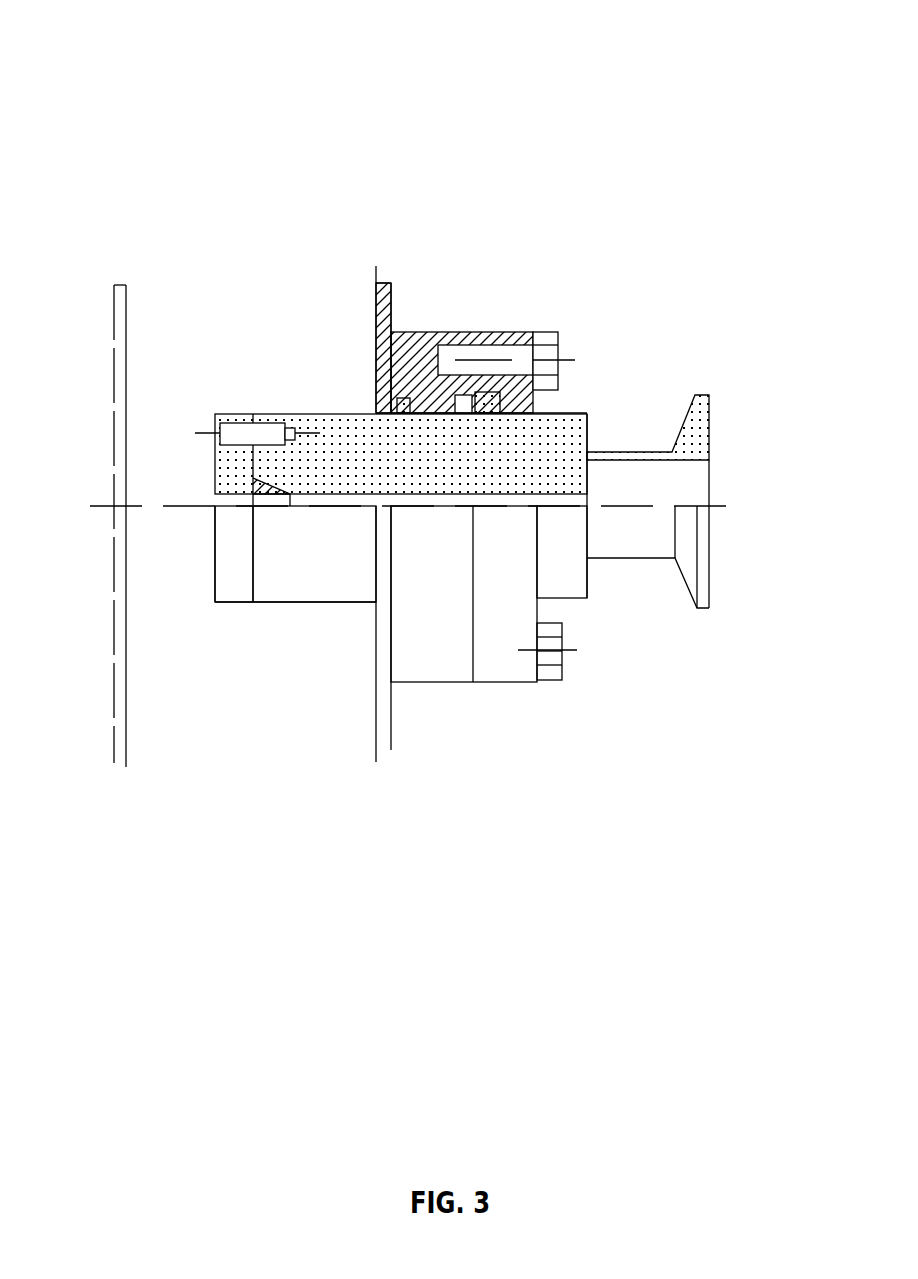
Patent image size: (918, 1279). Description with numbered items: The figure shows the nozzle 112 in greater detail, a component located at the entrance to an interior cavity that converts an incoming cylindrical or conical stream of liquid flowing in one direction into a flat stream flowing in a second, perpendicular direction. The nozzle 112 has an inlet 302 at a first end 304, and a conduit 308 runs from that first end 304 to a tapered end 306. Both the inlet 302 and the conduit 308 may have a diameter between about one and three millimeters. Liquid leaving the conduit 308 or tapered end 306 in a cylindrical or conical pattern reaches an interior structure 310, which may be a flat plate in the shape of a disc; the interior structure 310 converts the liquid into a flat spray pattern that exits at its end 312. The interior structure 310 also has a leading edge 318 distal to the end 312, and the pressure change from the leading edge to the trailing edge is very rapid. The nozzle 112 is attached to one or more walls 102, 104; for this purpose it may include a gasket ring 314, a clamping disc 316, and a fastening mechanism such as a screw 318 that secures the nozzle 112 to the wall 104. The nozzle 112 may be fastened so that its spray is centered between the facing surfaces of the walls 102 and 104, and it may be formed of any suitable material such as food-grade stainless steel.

The nozzle 112 is at (122, 72).
The wall 102 is at (120, 733).
The wall 104 is at (384, 720).
The inlet 302 is at (710, 502).
The first end 304 is at (732, 583).
The tapered end 306 is at (283, 496).
The conduit 308 is at (512, 508).
The interior structure 310 is at (250, 550).
The end 312 is at (253, 605).
The gasket ring 314 is at (410, 388).
The clamping disc 316 is at (223, 587).
The leading edge 318 is at (248, 503).